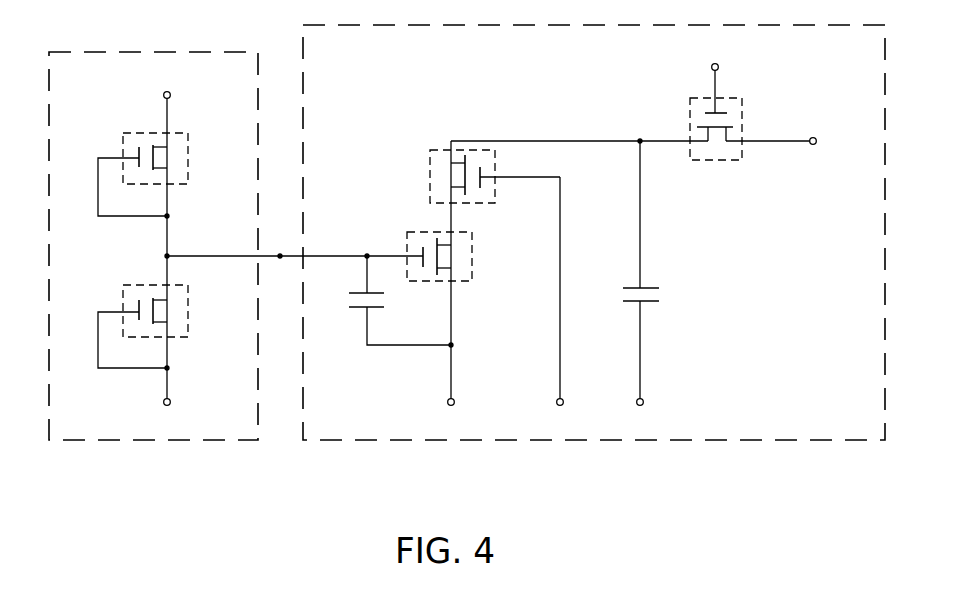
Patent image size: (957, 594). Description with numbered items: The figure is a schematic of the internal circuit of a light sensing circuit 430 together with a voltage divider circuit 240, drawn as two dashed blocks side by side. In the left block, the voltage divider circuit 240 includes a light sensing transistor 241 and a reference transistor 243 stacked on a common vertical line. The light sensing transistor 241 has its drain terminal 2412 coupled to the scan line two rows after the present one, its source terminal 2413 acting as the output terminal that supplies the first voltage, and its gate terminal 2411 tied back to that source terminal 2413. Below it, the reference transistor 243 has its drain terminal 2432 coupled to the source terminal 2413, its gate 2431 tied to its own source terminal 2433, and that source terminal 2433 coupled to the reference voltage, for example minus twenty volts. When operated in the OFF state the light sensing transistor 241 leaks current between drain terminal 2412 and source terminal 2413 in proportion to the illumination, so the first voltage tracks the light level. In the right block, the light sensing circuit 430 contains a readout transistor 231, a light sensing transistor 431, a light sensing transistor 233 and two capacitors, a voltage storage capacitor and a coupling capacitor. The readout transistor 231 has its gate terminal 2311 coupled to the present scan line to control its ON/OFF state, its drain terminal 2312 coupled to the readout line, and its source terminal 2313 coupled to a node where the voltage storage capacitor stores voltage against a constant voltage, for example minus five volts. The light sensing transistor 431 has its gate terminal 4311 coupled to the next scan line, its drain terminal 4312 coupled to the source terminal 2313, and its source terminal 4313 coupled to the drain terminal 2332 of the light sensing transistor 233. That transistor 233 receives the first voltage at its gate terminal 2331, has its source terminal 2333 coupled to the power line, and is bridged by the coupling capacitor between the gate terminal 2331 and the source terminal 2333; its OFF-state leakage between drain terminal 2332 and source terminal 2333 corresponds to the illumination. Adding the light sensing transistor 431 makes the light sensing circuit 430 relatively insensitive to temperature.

The voltage divider circuit 240 is at (150, 442).
The light sensing transistor 241 is at (154, 160).
The gate terminal 2411 is at (99, 149).
The drain terminal 2412 is at (189, 141).
The source terminal 2413 is at (189, 176).
The reference transistor 243 is at (154, 314).
The gate 2431 is at (99, 301).
The drain terminal 2432 is at (189, 293).
The source terminal 2433 is at (189, 328).
The light sensing circuit 430 is at (702, 442).
The light sensing transistor 431 is at (439, 150).
The gate terminal 4311 is at (488, 142).
The drain terminal 4312 is at (416, 161).
The source terminal 4313 is at (416, 193).
The light sensing transistor 233 is at (436, 246).
The gate terminal 2331 is at (383, 248).
The drain terminal 2332 is at (483, 240).
The source terminal 2333 is at (483, 275).
The readout transistor 231 is at (751, 120).
The gate terminal 2311 is at (753, 93).
The drain terminal 2312 is at (767, 155).
The source terminal 2313 is at (695, 165).